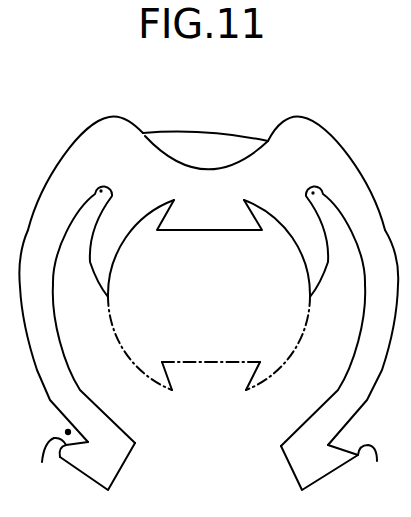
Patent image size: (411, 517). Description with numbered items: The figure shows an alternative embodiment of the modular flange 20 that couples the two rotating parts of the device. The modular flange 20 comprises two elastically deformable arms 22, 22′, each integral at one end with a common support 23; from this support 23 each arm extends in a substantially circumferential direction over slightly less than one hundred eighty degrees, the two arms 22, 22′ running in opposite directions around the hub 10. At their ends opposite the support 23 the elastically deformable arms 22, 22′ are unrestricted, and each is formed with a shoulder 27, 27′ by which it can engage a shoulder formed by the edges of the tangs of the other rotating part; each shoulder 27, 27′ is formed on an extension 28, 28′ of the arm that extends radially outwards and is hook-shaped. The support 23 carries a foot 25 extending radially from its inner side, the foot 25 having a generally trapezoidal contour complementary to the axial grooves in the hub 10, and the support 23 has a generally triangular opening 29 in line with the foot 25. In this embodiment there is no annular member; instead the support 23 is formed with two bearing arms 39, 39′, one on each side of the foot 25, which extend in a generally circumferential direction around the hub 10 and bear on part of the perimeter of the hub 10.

The tubular hub 10 is at (225, 374).
The modular flange 20 is at (60, 150).
The elastically deformable arm 22 is at (86, 412).
The elastically deformable arm 22′ is at (335, 410).
The support 23 is at (334, 132).
The foot 25 is at (221, 221).
The shoulder 27 is at (54, 460).
The shoulder 27′ is at (364, 467).
The extension 28 is at (98, 470).
The extension 28′ is at (327, 465).
The opening 29 is at (210, 148).
The bearing arm 39 is at (105, 257).
The bearing arm 39′ is at (309, 270).